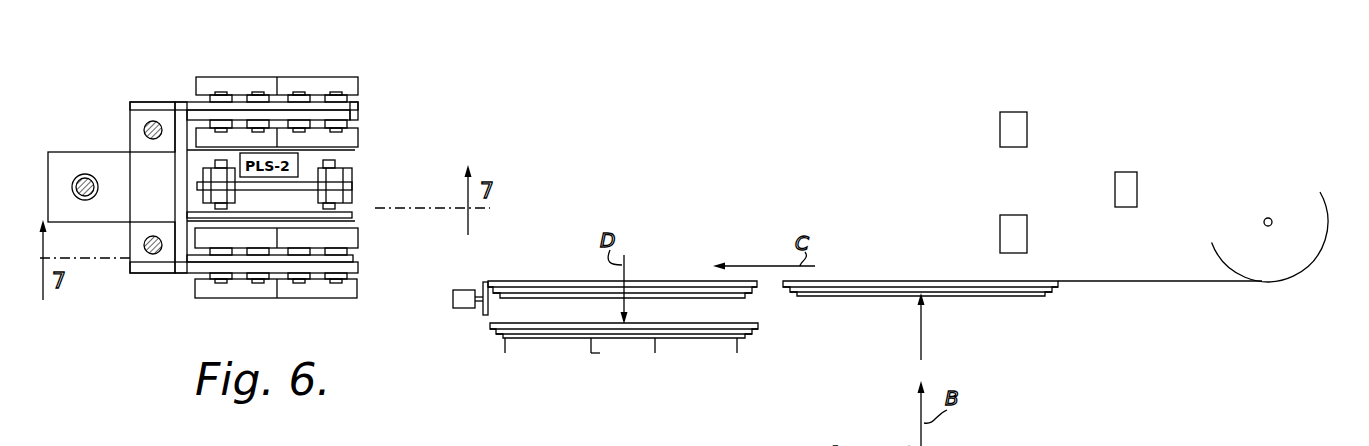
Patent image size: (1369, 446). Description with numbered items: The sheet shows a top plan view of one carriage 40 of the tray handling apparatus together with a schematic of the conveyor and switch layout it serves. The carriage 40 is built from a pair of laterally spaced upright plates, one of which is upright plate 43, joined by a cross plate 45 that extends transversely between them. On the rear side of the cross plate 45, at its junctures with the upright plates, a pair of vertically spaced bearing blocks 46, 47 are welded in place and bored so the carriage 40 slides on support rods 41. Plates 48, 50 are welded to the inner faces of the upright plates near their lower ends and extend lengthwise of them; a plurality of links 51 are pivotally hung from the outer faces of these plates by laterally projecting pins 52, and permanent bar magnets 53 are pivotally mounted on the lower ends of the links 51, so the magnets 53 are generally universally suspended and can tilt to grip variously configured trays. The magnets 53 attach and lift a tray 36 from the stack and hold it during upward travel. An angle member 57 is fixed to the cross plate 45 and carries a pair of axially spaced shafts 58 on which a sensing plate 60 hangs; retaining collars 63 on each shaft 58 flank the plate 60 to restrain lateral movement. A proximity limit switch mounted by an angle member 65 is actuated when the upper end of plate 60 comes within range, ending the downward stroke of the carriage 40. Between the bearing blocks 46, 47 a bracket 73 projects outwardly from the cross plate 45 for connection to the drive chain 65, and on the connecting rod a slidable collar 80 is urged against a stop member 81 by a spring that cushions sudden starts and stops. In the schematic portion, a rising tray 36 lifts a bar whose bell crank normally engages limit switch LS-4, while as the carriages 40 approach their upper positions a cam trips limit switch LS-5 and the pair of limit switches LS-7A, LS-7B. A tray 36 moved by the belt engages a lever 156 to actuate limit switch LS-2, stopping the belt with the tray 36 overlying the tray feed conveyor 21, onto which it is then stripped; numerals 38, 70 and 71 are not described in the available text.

In FIG. 9, the tray feed conveyor 21 is at (606, 353).
In FIG. 9, the tray 36 is at (551, 304).
In FIG. 9, the roller 38 is at (1192, 287).
In FIG. 9, the carriage 40 is at (1010, 445).
In FIG. 6, the support rod 41 is at (145, 128).
In FIG. 6, the upright plate 43 is at (178, 273).
In FIG. 6, the cross plate 45 is at (178, 190).
In FIG. 6, the bearing block 46 is at (140, 108).
In FIG. 6, the bearing block 47 is at (158, 273).
In FIG. 6, the plate 48 is at (358, 113).
In FIG. 6, the plate 50 is at (358, 288).
In FIG. 6, the link 51 is at (290, 95).
In FIG. 6, the pin 52 is at (335, 293).
In FIG. 6, the permanent bar magnet 53 is at (215, 58).
In FIG. 6, the angle member 57 is at (355, 214).
In FIG. 6, the shaft 58 is at (215, 205).
In FIG. 6, the sensing plate 60 is at (358, 238).
In FIG. 6, the retaining collar 63 is at (205, 172).
In FIG. 6, the angle member 65 is at (70, 445).
In FIG. 6, the clamp assembly 70 is at (385, 82).
In FIG. 9, the support 71 is at (571, 442).
In FIG. 6, the bracket 73 is at (108, 212).
In FIG. 6, the slidable collar 80 is at (130, 439).
In FIG. 6, the stop member 81 is at (85, 174).
In FIG. 9, the lever 156 is at (485, 312).
In FIG. 9, the limit switch LS-2 is at (476, 268).
In FIG. 9, the limit switch LS-4 is at (1137, 185).
In FIG. 9, the limit switch LS-5 is at (1012, 112).
In FIG. 9, the limit switch LS-7A is at (1020, 225).
In FIG. 9, the limit switch LS-7B is at (1016, 222).